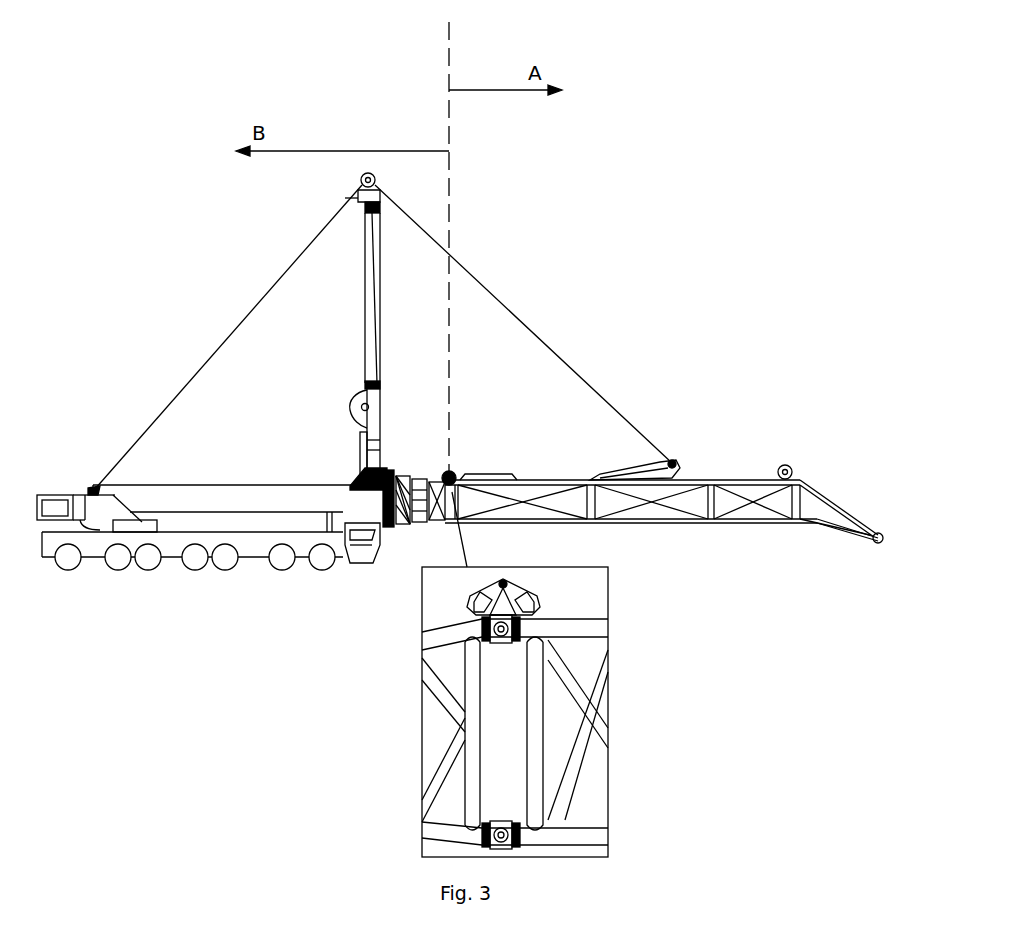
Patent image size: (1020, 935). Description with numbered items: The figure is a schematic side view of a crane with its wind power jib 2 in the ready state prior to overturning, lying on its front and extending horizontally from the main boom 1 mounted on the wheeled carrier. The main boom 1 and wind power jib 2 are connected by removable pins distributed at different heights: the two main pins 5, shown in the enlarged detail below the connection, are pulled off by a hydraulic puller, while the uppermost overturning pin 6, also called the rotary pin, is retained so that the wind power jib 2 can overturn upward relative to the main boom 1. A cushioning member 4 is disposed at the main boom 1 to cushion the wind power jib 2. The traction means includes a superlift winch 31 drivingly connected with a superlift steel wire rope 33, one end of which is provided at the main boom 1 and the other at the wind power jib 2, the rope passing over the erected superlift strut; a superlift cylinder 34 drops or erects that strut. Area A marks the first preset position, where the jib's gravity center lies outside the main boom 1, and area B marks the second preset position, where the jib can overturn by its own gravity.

The main boom 1 is at (272, 492).
The wind power jib 2 is at (531, 480).
The cushioning member 4 is at (350, 481).
The main pin 5 is at (504, 642).
The overturning pin 6 is at (508, 582).
The superlift winch 31 is at (350, 408).
The superlift steel wire rope 33 is at (590, 384).
The superlift cylinder 34 is at (358, 456).